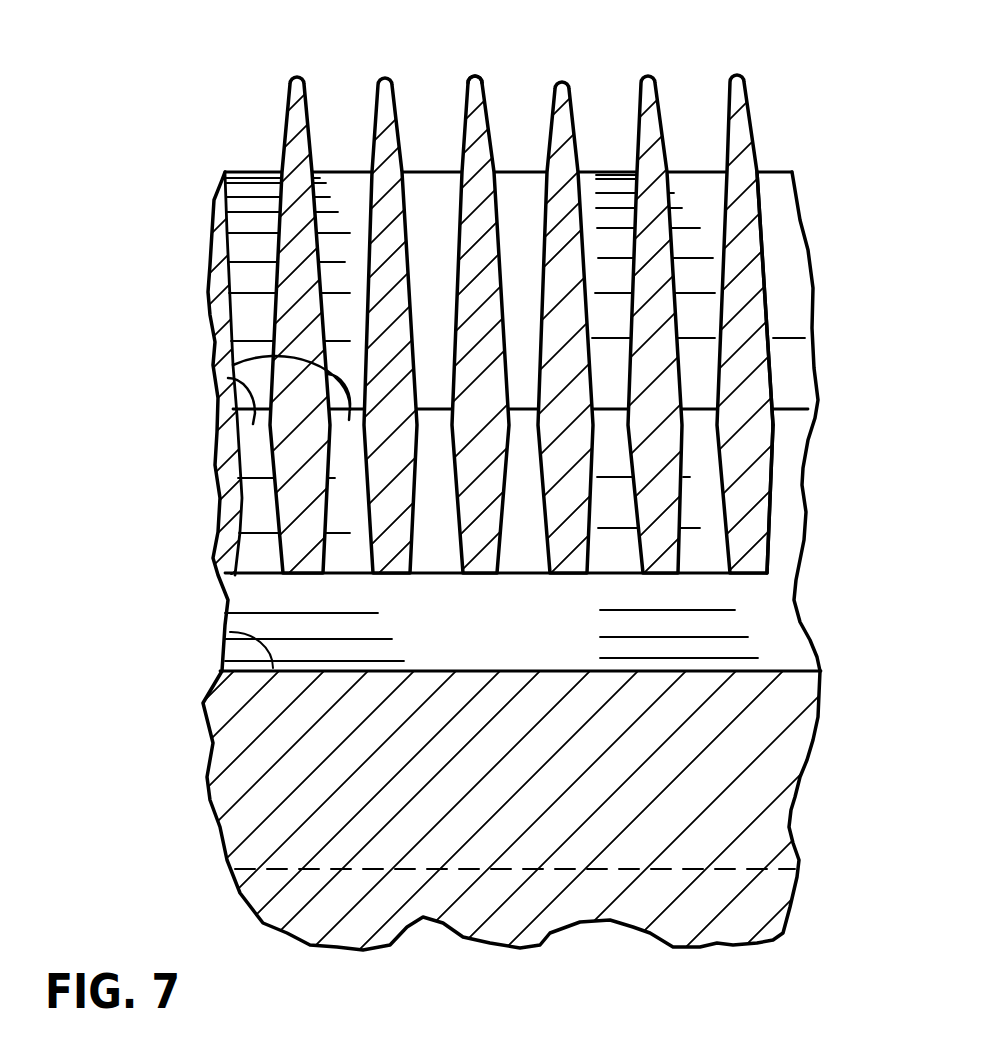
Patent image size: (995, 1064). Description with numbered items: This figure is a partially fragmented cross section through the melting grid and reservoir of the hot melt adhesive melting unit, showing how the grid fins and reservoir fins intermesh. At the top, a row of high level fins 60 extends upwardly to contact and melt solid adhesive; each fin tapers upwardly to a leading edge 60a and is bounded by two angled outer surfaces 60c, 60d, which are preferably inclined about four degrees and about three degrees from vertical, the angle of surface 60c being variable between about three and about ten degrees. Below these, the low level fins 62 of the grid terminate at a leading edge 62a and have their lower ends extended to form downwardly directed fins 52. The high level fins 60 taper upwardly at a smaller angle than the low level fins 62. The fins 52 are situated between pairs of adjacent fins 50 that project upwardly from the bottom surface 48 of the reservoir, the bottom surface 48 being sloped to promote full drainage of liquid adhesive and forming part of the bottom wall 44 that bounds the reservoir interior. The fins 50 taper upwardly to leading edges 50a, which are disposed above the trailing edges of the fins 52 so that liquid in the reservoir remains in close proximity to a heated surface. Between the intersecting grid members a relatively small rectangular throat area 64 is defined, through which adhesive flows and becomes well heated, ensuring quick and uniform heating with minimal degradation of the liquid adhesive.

The bottom wall 44 is at (740, 920).
The bottom surface 48 is at (746, 868).
The fins 50 is at (780, 690).
The leading edges 50a is at (230, 632).
The fins 52 is at (790, 626).
The fins 60 is at (368, 122).
The leading edge 60a is at (480, 76).
The angled outer surface 60c is at (765, 237).
The angled outer surface 60d is at (770, 508).
The low level fins 62 is at (243, 166).
The leading edge 62a is at (775, 168).
The throat area 64 is at (228, 378).